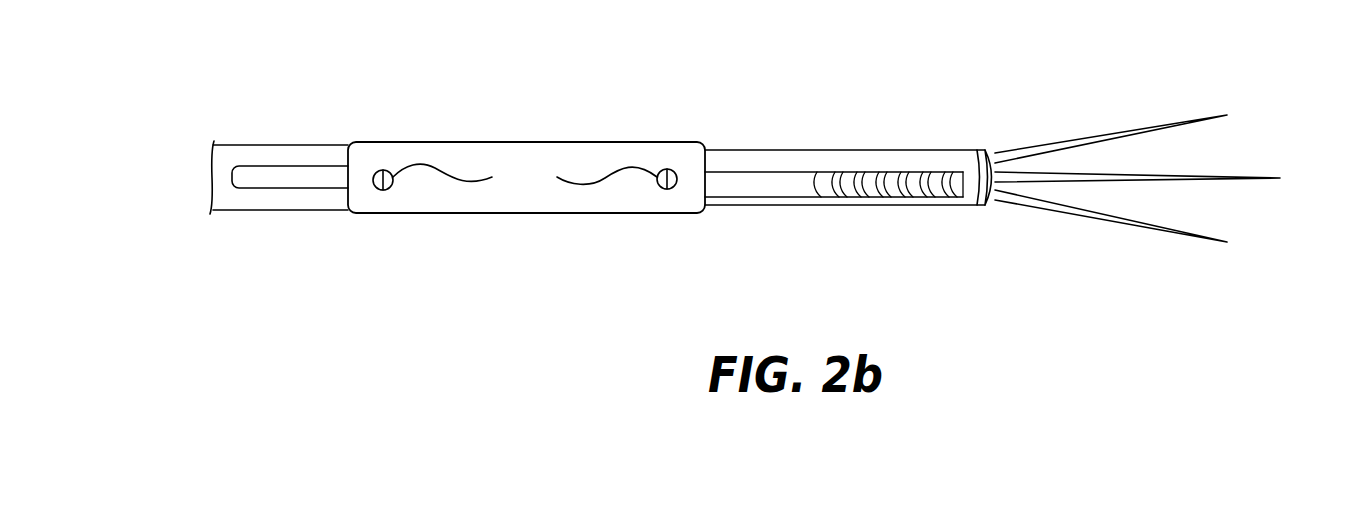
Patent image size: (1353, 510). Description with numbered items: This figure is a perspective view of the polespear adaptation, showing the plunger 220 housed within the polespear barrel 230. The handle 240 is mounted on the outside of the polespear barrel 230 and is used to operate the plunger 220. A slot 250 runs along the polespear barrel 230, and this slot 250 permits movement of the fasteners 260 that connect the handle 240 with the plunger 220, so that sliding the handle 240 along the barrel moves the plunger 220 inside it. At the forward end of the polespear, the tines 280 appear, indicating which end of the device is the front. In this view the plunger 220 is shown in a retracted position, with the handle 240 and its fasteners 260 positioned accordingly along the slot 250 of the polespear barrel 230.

The plunger 220 is at (745, 183).
The polespear barrel 230 is at (262, 145).
The handle 240 is at (515, 205).
The slot 250 is at (298, 190).
The fasteners 260 is at (525, 177).
The tines 280 is at (1210, 118).